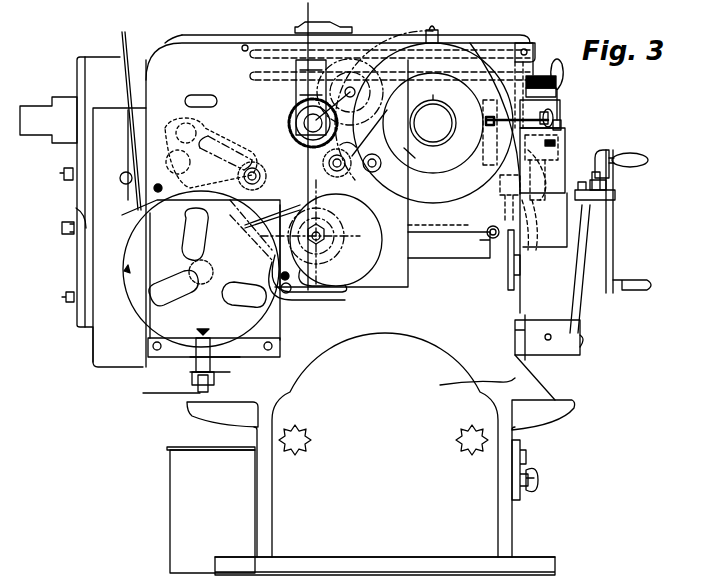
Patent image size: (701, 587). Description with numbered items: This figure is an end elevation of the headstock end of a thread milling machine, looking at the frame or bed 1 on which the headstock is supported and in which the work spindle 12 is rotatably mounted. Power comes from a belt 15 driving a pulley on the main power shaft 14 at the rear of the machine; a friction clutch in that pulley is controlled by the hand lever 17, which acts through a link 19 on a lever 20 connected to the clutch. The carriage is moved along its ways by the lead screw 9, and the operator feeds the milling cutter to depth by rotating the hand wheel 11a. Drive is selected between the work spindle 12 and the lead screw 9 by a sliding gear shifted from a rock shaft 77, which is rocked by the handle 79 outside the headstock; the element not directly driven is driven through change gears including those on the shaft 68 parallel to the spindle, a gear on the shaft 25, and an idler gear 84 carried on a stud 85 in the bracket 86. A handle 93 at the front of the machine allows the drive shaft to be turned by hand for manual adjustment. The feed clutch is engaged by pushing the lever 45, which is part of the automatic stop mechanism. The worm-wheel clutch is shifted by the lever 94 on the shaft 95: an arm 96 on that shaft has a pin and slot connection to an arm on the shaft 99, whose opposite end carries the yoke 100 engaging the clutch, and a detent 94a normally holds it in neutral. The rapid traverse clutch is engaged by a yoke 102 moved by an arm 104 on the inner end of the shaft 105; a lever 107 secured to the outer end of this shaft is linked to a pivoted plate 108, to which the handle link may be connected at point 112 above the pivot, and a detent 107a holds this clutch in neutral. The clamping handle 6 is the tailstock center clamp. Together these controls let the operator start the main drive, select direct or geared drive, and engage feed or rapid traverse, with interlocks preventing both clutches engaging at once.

The frame or bed 1 is at (540, 383).
The handle 6 is at (315, 9).
The lead screw 9 is at (346, 240).
The hand wheel 11a is at (604, 178).
The work spindle 12 is at (424, 117).
The main power shaft 14 is at (192, 268).
The belt 15 is at (128, 37).
The hand lever 17 is at (578, 316).
The link 19 is at (210, 386).
The lever 20 is at (200, 360).
The shaft 25 is at (352, 152).
The lever 45 is at (556, 120).
The shaft 68 is at (336, 26).
The rock shaft 77 is at (387, 50).
The handle 79 is at (540, 76).
The idler gear 84 is at (272, 114).
The stud 85 is at (251, 165).
The bracket 86 is at (178, 142).
The handle 93 is at (616, 236).
The lever 94 is at (568, 75).
The detent 94a is at (540, 109).
The shaft 95 is at (555, 168).
The arm 96 is at (488, 146).
The shaft 99 is at (452, 78).
The yoke 100 is at (298, 110).
The yoke 102 is at (383, 126).
The arm 104 is at (422, 156).
The shaft 105 is at (470, 204).
The lever 107 is at (522, 245).
The detent 107a is at (520, 195).
The plate 108 is at (514, 288).
The connection point 112 is at (385, 572).